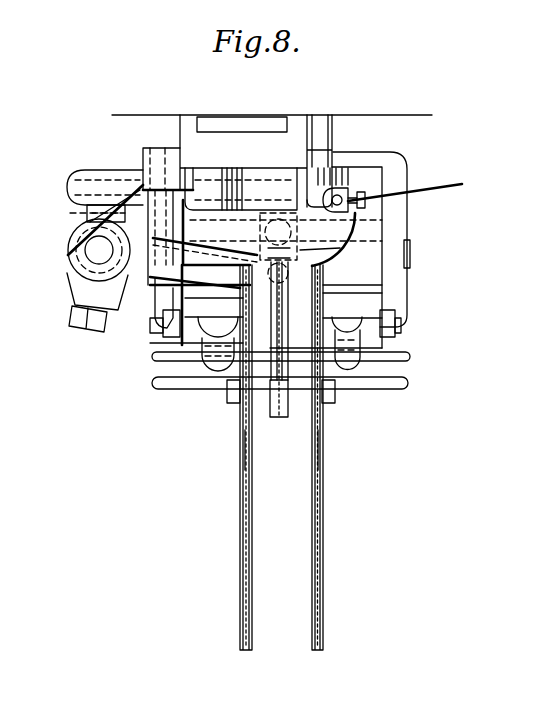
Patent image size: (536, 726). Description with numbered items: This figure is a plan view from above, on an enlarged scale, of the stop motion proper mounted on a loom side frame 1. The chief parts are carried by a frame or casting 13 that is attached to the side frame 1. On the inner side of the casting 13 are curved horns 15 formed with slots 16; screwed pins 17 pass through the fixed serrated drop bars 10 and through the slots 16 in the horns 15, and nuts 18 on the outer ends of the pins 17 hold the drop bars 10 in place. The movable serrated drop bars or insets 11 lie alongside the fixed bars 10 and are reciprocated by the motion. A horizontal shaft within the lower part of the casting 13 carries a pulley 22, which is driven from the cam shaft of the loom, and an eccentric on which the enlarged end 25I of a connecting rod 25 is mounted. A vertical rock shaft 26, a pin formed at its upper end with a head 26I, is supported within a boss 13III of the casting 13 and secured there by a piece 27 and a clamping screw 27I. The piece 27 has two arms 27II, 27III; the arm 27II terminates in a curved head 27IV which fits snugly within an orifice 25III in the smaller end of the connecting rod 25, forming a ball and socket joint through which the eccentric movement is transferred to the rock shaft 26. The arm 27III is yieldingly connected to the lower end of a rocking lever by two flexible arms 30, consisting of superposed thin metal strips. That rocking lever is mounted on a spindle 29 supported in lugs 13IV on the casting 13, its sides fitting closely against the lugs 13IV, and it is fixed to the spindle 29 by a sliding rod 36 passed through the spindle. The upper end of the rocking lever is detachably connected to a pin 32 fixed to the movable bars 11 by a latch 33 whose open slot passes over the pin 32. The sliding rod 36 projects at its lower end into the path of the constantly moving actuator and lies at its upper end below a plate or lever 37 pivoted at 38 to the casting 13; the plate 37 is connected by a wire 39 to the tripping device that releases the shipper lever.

The side frame 1 is at (413, 114).
The fixed serrated drop bars 10 is at (240, 448).
The movable serrated drop bars 11 is at (315, 458).
The casting 13 is at (293, 128).
The boss 13III is at (123, 208).
The lugs 13IV is at (368, 230).
The curved horns 15 is at (205, 353).
The slots 16 is at (193, 292).
The screwed pins 17 is at (163, 330).
The nuts 18 is at (175, 337).
The pulley 22 is at (383, 383).
The connecting rod 25 is at (205, 182).
The enlarged end of connecting rod 25I is at (357, 180).
The orifice 25III is at (78, 168).
The vertical rock shaft 26 is at (70, 265).
The head 26I is at (68, 250).
The clamping piece 27 is at (70, 275).
The clamping screw 27I is at (80, 315).
The arm 27II is at (88, 172).
The arm 27III is at (103, 310).
The curved head 27IV is at (117, 172).
The spindle 29 is at (411, 255).
The flexible arms 30 is at (225, 267).
The pin 32 is at (250, 403).
The latch 33 is at (283, 415).
The sliding rod 36 is at (268, 220).
The plate or lever 37 is at (325, 247).
The pivot 38 is at (150, 285).
The wire 39 is at (463, 185).